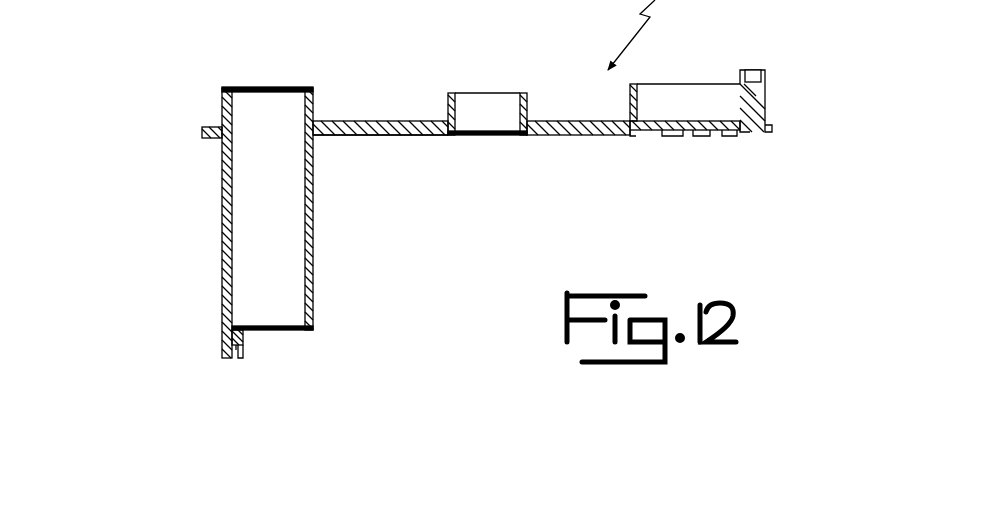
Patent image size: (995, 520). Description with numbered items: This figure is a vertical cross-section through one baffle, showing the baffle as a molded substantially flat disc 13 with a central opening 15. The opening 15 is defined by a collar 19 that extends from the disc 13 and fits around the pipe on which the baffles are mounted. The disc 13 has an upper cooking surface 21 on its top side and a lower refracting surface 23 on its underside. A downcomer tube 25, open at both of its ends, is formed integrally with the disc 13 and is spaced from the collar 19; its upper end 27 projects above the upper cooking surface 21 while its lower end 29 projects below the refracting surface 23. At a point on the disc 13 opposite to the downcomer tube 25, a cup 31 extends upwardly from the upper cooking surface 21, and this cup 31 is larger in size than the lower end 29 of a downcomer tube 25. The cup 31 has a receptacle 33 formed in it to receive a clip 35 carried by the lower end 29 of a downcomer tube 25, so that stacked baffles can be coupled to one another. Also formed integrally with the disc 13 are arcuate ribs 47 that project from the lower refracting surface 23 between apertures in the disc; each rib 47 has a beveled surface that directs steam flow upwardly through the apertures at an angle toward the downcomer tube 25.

The disc 13 is at (203, 132).
The central opening 15 is at (527, 71).
The collar 19 is at (523, 95).
The upper cooking surface 21 is at (337, 118).
The lower refracting surface 23 is at (598, 140).
The downcomer tube 25 is at (225, 232).
The upper end 27 is at (250, 87).
The lower end 29 is at (275, 331).
The cup 31 is at (670, 85).
The receptacle 33 is at (765, 70).
The clip 35 is at (228, 340).
The arcuate rib 47 is at (410, 134).